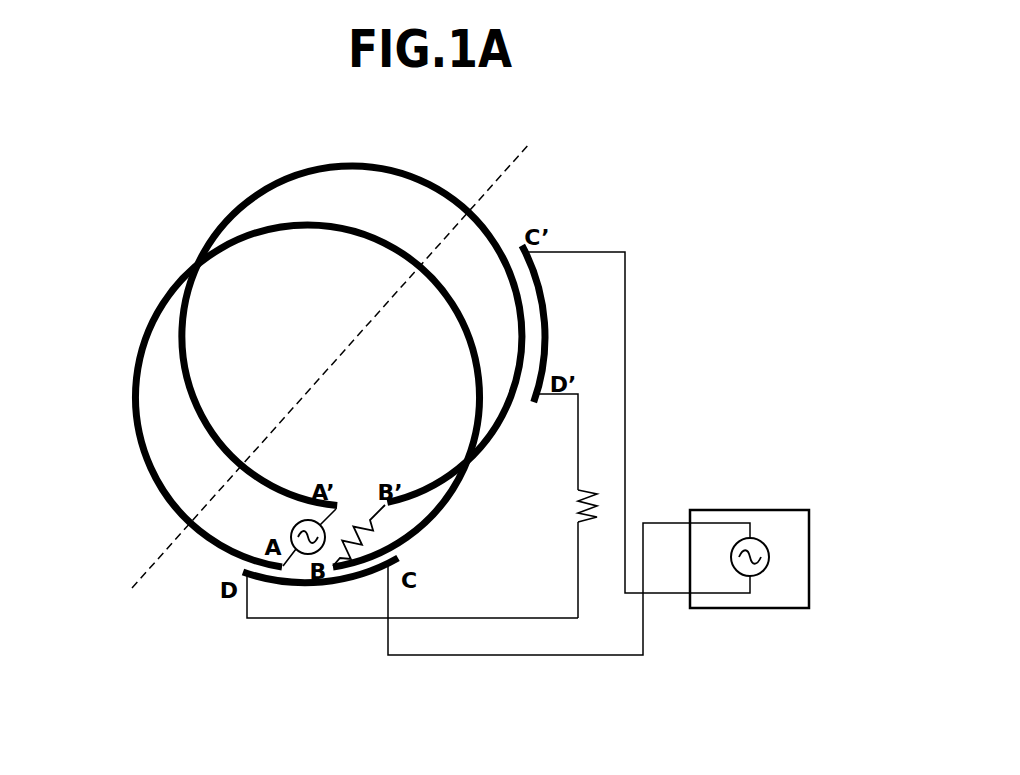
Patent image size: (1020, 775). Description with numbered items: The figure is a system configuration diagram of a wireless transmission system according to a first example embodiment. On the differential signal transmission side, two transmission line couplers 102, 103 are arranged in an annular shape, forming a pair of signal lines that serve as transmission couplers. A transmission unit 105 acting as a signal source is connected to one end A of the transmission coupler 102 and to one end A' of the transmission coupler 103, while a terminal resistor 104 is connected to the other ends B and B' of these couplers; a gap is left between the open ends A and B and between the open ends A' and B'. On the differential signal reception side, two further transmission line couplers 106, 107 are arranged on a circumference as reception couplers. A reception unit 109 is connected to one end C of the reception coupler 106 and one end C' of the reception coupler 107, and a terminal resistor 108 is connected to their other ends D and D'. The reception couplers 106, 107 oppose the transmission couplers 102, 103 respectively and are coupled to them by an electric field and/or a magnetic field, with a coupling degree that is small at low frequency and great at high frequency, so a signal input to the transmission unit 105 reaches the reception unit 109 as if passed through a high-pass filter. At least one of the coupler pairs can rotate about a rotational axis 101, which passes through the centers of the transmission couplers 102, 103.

The rotational axis 101 is at (148, 567).
The transmission line coupler 102 is at (158, 288).
The transmission line coupler 103 is at (247, 190).
The terminal resistor 104 is at (358, 510).
The transmission unit 105 is at (284, 510).
The transmission line coupler 106 is at (300, 594).
The transmission line coupler 107 is at (552, 298).
The terminal resistor 108 is at (552, 508).
The reception unit 109 is at (749, 500).